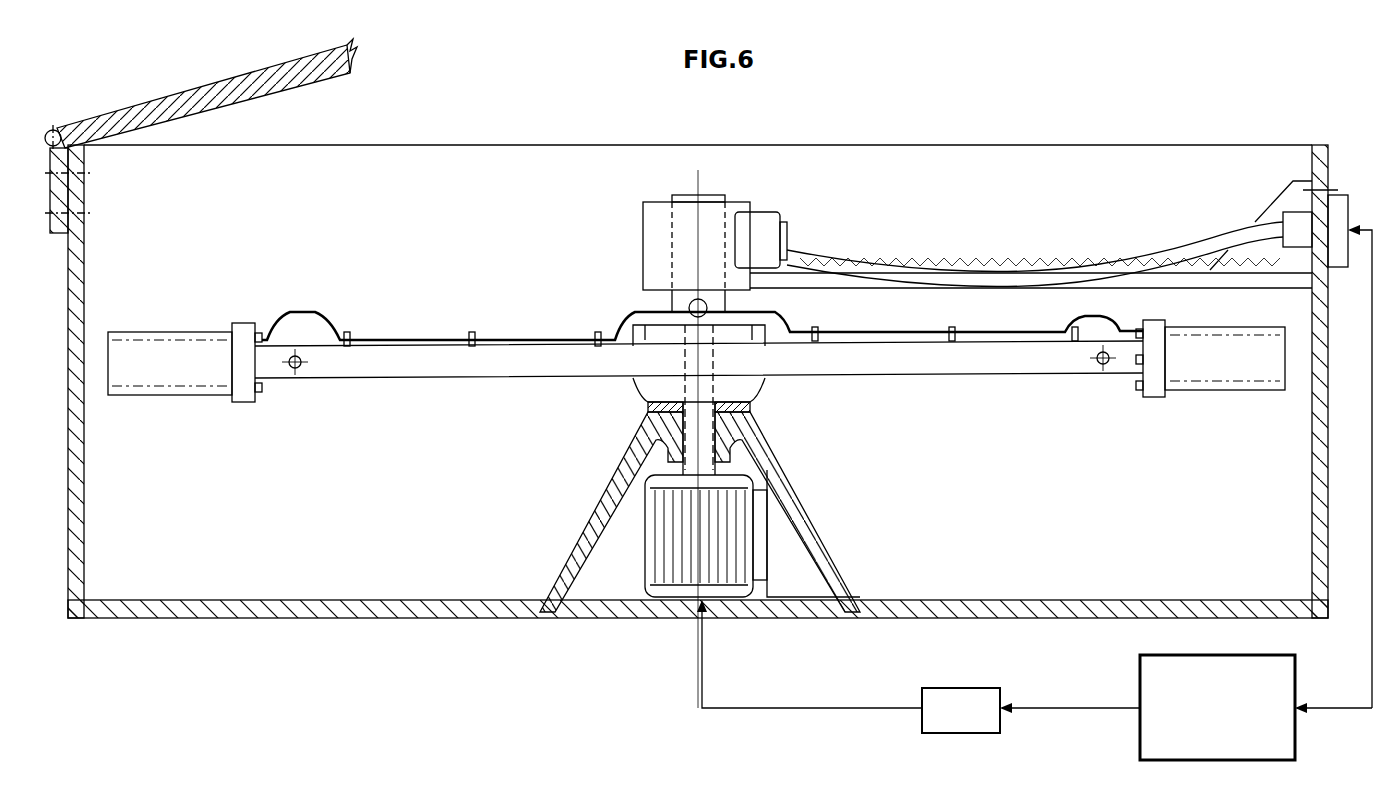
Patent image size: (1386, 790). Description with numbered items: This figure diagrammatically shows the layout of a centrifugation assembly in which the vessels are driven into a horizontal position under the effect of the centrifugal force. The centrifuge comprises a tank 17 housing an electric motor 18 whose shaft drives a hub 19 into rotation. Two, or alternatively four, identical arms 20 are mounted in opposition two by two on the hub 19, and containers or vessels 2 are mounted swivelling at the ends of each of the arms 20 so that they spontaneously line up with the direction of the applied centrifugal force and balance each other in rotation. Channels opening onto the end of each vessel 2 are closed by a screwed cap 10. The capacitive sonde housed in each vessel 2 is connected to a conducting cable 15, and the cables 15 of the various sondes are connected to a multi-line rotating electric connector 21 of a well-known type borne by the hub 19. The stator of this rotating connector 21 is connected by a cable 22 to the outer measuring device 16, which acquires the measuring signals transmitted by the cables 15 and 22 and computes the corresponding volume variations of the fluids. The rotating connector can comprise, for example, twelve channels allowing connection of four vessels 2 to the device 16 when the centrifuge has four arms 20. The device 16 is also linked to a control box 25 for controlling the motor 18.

The vessel 2 is at (173, 298).
The screwed cap 10 is at (262, 387).
The conducting cable 15 is at (878, 332).
The measuring device 16 is at (1256, 495).
The tank 17 is at (118, 640).
The electric motor 18 is at (398, 340).
The hub 19 is at (648, 393).
The arm 20 is at (447, 362).
The rotating electric connector 21 is at (747, 182).
The cable 22 is at (885, 238).
The control box 25 is at (921, 667).